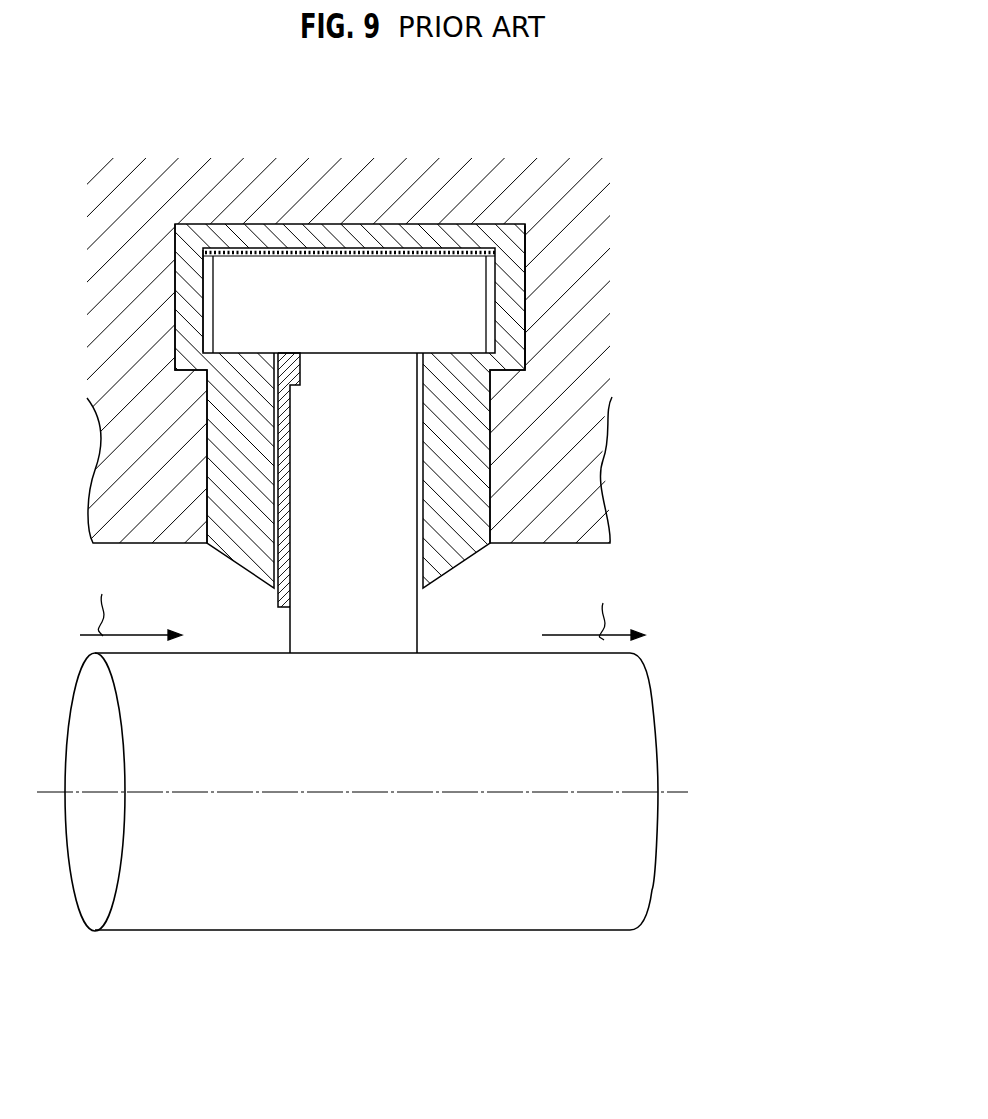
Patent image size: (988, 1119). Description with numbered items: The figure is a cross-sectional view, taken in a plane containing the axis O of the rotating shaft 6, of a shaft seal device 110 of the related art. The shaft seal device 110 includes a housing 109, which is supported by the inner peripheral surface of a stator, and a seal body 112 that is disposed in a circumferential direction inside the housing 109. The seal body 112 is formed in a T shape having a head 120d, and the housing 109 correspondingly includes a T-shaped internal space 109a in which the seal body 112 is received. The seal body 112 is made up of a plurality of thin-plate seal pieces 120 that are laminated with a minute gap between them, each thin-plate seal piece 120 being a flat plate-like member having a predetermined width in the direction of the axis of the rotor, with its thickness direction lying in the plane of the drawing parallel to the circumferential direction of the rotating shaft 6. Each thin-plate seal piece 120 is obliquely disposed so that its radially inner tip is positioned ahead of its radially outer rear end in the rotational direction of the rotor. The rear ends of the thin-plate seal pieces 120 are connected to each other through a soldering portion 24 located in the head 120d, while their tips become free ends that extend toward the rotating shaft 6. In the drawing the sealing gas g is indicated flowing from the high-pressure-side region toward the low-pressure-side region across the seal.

The shaft seal device 110 is at (615, 131).
The housing 109 is at (512, 282).
The T-shaped internal space 109a is at (492, 313).
The thin-plate seal piece 120 is at (449, 349).
The seal body 112 is at (385, 300).
The head 120d is at (283, 310).
The soldering portion 24 is at (291, 252).
The rotating shaft 6 is at (542, 915).
The axis of rotation O is at (45, 793).
The sealing gas g is at (362, 606).